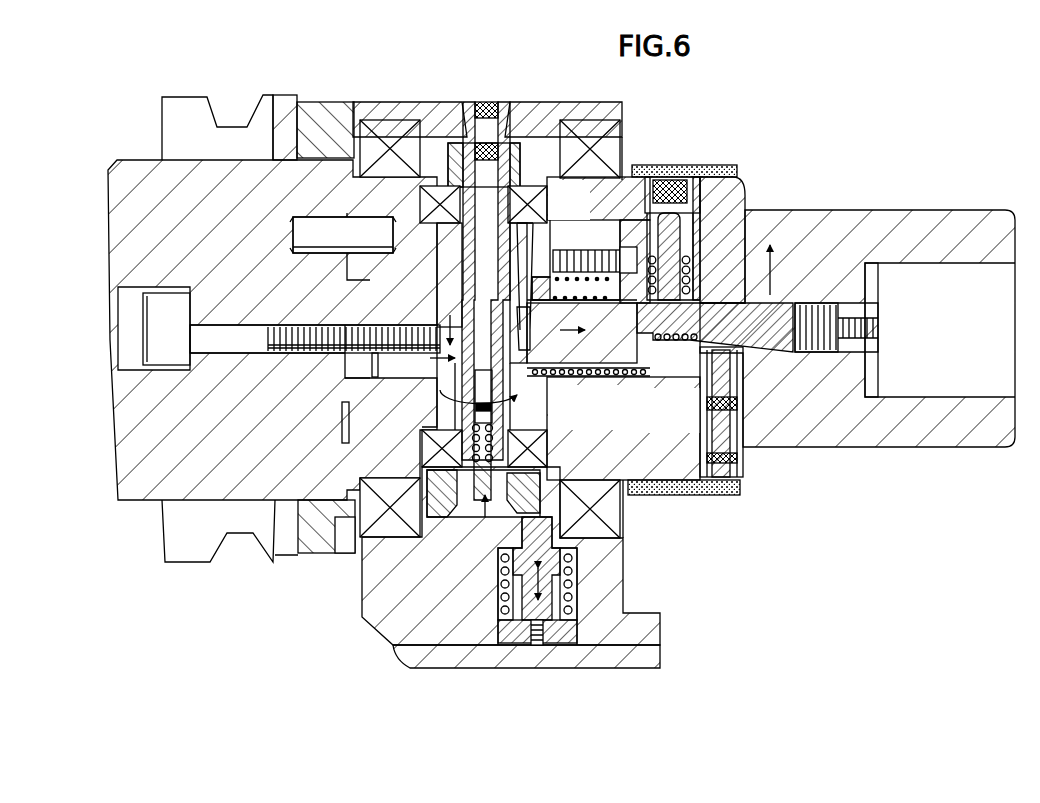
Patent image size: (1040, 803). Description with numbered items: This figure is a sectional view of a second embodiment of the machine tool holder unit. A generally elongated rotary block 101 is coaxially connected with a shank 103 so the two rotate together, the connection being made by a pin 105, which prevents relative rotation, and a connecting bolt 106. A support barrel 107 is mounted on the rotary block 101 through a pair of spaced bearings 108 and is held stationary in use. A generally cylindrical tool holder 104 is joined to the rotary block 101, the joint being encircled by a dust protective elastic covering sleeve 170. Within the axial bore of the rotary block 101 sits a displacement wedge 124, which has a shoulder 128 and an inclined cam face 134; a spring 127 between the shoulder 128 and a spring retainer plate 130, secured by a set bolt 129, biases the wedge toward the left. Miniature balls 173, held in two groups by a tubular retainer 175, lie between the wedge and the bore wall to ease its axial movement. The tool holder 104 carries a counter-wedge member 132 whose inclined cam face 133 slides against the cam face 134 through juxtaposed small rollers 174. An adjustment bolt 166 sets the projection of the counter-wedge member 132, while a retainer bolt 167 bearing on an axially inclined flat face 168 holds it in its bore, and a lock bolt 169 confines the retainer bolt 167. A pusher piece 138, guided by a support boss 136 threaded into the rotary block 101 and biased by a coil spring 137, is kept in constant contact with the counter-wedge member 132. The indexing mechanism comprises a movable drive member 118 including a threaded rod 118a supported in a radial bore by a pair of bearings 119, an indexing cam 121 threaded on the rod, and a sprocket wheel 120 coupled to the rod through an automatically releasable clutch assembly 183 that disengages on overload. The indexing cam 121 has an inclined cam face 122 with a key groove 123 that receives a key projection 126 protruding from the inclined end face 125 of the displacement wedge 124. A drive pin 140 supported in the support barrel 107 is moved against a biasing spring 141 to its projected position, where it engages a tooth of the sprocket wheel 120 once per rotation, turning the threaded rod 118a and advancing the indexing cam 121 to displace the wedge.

The rotary block 101 is at (652, 470).
The shank 103 is at (147, 467).
The tool holder 104 is at (893, 227).
The pin 105 is at (313, 228).
The connecting bolt 106 is at (203, 322).
The support barrel 107 is at (372, 600).
The bearings 108 is at (385, 135).
The movable drive member 118 is at (367, 362).
The threaded rod 118a is at (470, 263).
The bearings 119 is at (430, 222).
The sprocket wheel 120 is at (590, 550).
The indexing cam 121 is at (450, 287).
The inclined cam face 122 is at (523, 245).
The key groove 123 is at (523, 233).
The displacement wedge 124 is at (606, 377).
The inclined end face 125 is at (463, 372).
The key projection 126 is at (430, 307).
The spring 127 is at (550, 268).
The shoulder 128 is at (650, 377).
The set bolt 129 is at (607, 255).
The spring retainer plate 130 is at (650, 220).
The counter-wedge member 132 is at (773, 320).
The inclined cam face 133 is at (690, 327).
The inclined cam face 134 is at (680, 303).
The support boss 136 is at (690, 200).
The coil spring 137 is at (777, 237).
The pusher piece 138 is at (700, 225).
The drive pin 140 is at (550, 567).
The biasing spring 141 is at (500, 567).
The adjustment bolt 166 is at (867, 323).
The retainer bolt 167 is at (743, 363).
The axially inclined flat face 168 is at (753, 350).
The lock bolt 169 is at (743, 450).
The dust protective elastic covering sleeve 170 is at (700, 167).
The miniature balls 173 is at (560, 377).
The rollers 174 is at (720, 433).
The retainer 175 is at (585, 377).
The automatically releasable clutch assembly 183 is at (483, 522).